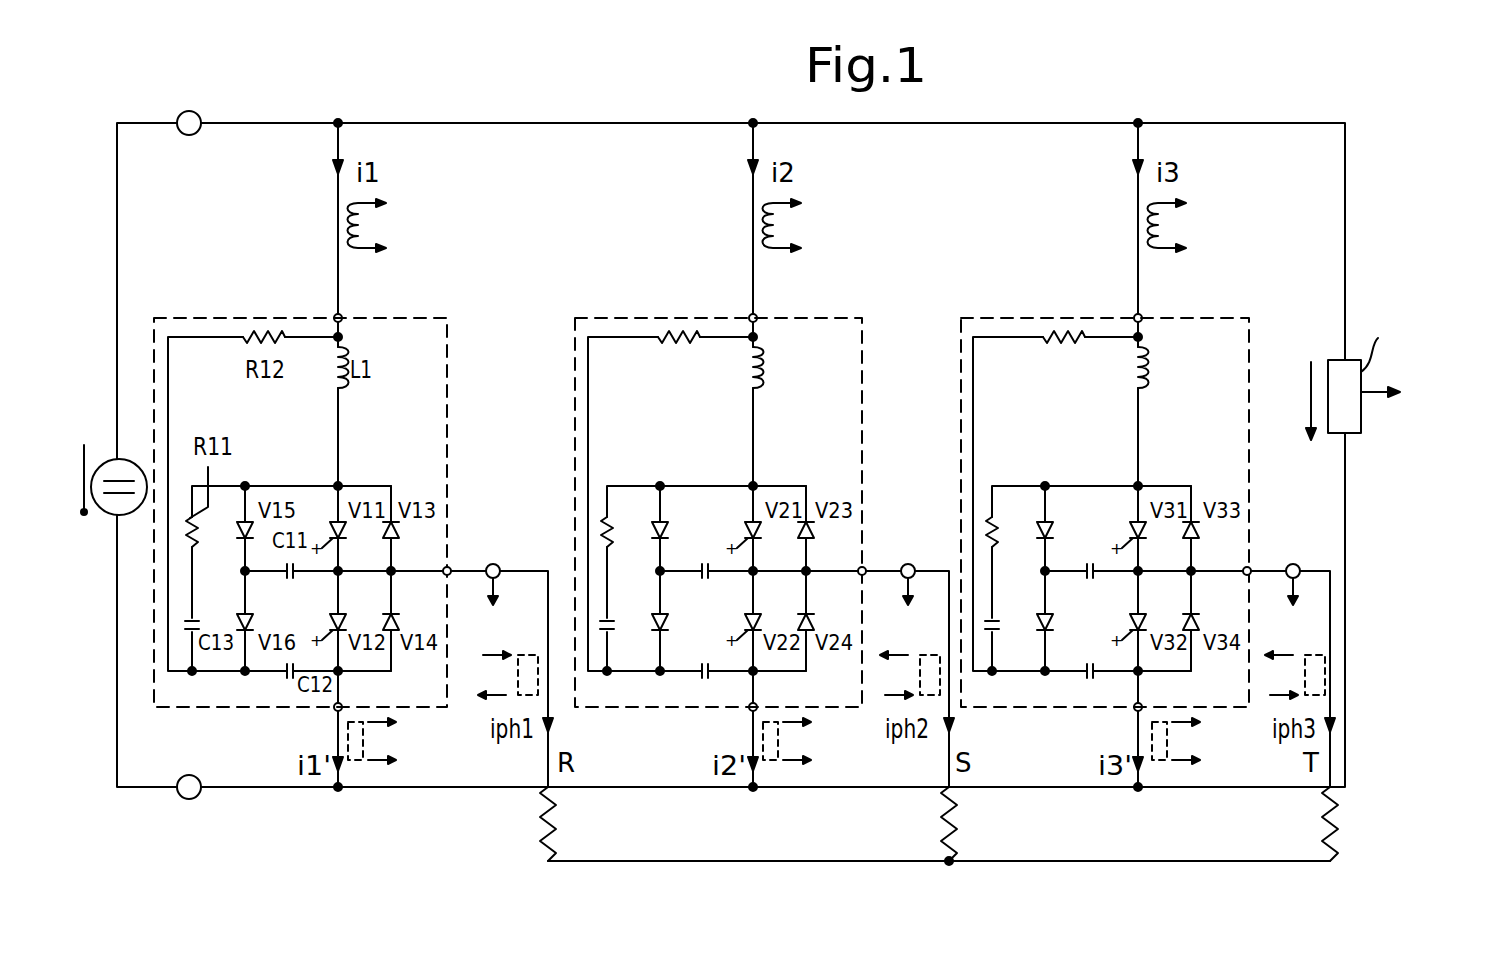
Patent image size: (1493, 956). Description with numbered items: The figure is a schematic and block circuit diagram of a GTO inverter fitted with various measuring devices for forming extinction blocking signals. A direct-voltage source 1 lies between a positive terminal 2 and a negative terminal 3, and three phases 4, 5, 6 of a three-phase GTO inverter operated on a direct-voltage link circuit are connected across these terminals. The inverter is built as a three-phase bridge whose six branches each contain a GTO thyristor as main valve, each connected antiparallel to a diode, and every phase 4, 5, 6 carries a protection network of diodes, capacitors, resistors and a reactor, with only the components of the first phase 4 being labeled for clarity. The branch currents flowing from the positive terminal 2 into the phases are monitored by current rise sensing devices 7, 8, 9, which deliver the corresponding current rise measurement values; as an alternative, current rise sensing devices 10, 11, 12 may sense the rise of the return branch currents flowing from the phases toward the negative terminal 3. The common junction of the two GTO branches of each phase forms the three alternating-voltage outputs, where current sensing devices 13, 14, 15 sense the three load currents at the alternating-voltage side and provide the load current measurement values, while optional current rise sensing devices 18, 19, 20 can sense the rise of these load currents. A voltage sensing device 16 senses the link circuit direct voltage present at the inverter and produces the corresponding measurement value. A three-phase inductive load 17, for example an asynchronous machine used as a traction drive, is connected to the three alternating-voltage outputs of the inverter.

The direct-voltage source 1 is at (119, 472).
The positive terminal 2 is at (173, 131).
The negative terminal 3 is at (178, 775).
The first phase 4 is at (320, 512).
The second phase 5 is at (738, 512).
The third phase 6 is at (1126, 512).
The current rise sensing device 7 is at (420, 249).
The current rise sensing device 8 is at (835, 249).
The current rise sensing device 9 is at (1220, 249).
The current rise sensing device 10 is at (451, 805).
The current rise sensing device 11 is at (849, 789).
The current rise sensing device 12 is at (1206, 784).
The current sensing device 13 is at (491, 588).
The current sensing device 14 is at (906, 588).
The current sensing device 15 is at (1293, 588).
The voltage sensing device 16 is at (1340, 415).
The three-phase inductive load 17 is at (752, 850).
The current rise sensing device 18 is at (500, 733).
The current rise sensing device 19 is at (904, 724).
The current rise sensing device 20 is at (1371, 671).